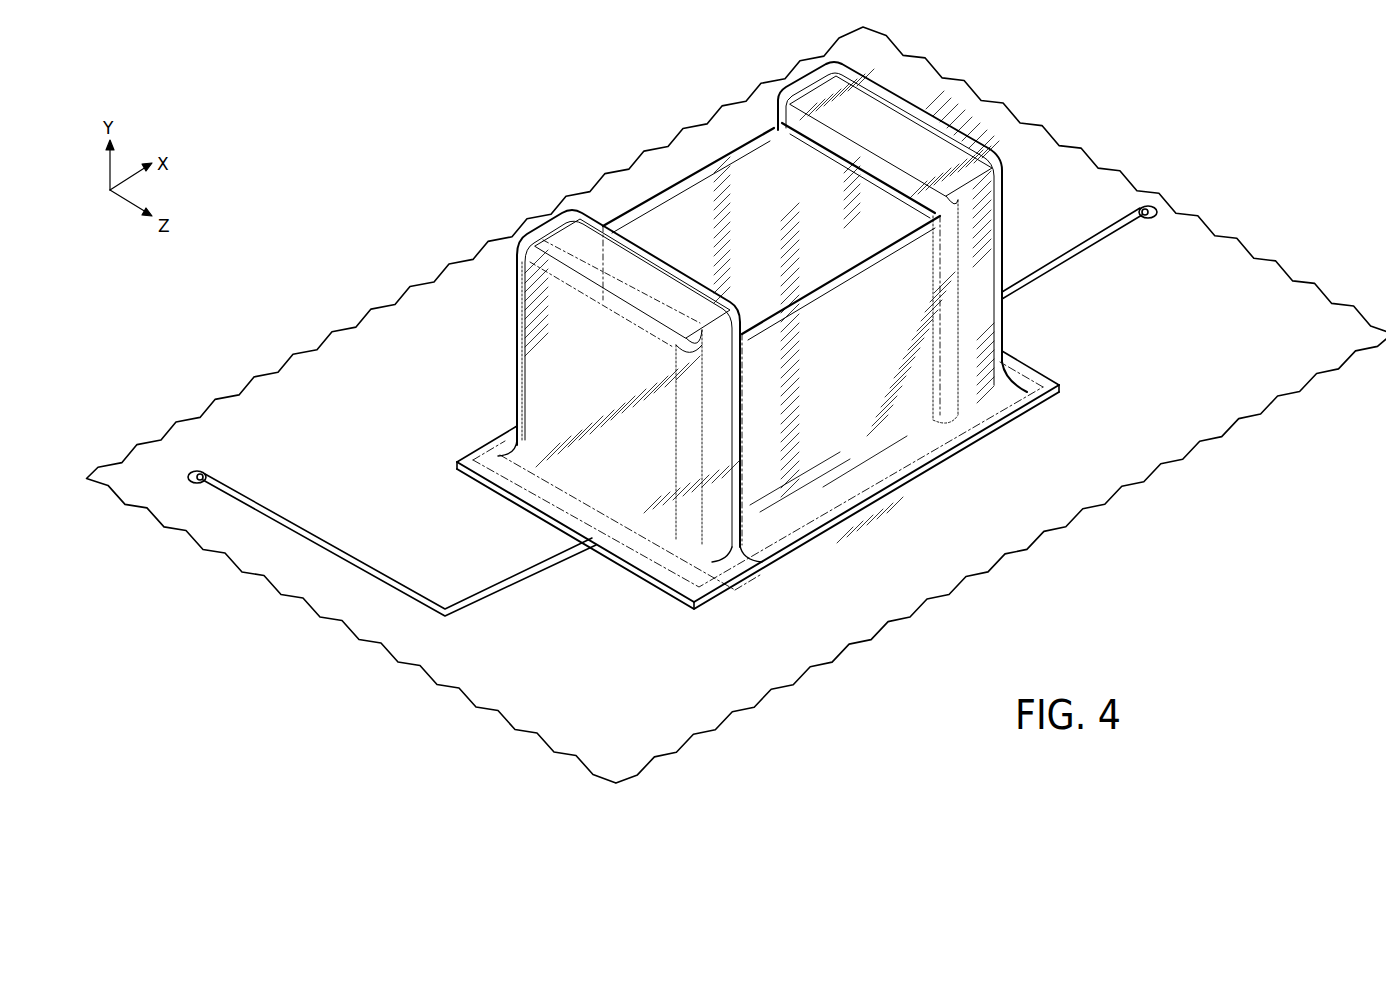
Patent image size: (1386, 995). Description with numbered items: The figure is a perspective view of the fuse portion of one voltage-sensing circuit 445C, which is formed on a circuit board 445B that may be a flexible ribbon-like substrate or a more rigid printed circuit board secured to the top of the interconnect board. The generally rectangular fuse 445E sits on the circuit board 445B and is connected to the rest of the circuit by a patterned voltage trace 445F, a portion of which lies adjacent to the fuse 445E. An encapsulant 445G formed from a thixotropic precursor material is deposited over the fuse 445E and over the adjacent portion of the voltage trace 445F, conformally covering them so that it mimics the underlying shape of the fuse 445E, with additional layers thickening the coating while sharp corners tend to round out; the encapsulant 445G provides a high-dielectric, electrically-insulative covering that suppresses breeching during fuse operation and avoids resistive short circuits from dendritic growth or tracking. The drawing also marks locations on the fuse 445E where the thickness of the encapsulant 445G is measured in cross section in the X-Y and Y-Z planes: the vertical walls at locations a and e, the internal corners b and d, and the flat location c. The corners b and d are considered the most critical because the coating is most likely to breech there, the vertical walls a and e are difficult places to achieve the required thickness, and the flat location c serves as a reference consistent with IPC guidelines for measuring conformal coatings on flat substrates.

The circuit board 445B is at (396, 404).
The voltage-sensing circuit 445C is at (423, 188).
The fuse 445E is at (764, 312).
The voltage trace 445F is at (321, 537).
The encapsulant 445G is at (903, 487).
The vertical wall measurement location a is at (548, 357).
The internal corner measurement location b is at (752, 318).
The flat measurement location c is at (676, 199).
The internal corner measurement location d is at (838, 158).
The vertical wall measurement location e is at (1003, 222).